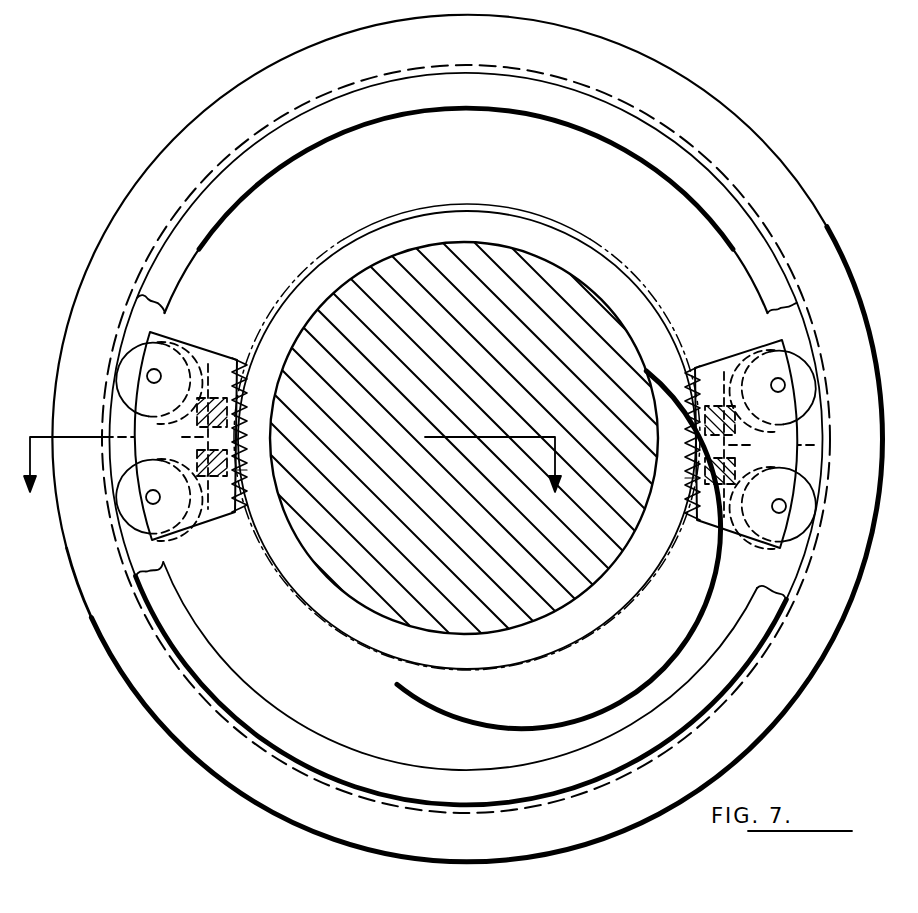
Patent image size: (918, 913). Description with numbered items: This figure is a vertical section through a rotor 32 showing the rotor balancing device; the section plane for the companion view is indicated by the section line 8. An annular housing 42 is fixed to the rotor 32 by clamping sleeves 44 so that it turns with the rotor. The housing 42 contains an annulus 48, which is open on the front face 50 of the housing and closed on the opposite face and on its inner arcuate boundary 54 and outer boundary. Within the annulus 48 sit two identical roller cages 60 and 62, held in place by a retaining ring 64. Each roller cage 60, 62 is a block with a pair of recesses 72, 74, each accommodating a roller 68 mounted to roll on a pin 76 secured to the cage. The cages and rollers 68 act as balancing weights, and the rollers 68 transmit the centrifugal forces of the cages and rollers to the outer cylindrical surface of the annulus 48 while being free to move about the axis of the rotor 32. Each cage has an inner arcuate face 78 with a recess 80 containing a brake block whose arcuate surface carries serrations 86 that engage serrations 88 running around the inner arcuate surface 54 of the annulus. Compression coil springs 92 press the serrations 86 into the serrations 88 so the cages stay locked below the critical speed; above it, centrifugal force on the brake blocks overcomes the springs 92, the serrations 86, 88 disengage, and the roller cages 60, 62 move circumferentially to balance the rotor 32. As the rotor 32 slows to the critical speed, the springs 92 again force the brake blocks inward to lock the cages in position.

The section line 8- 8 is at (293, 481).
The rotor 32 is at (456, 376).
The annular housing 42 is at (724, 83).
The clamping sleeves 44 is at (363, 242).
The annulus 48 is at (456, 736).
The front face 50 is at (146, 186).
The inner arcuate boundary 54 is at (502, 206).
The roller cage 60 is at (221, 547).
The roller cage 62 is at (728, 337).
The retaining ring 64 is at (224, 210).
The rollers 68 is at (127, 352).
The recess 72 is at (103, 452).
The recess 74 is at (103, 424).
The pin 76 is at (158, 372).
The inner arcuate face 78 is at (243, 480).
The recess 80 is at (468, 442).
The serrations 86 is at (242, 441).
The serrations 88 is at (244, 358).
The compression coil springs 92 is at (466, 441).